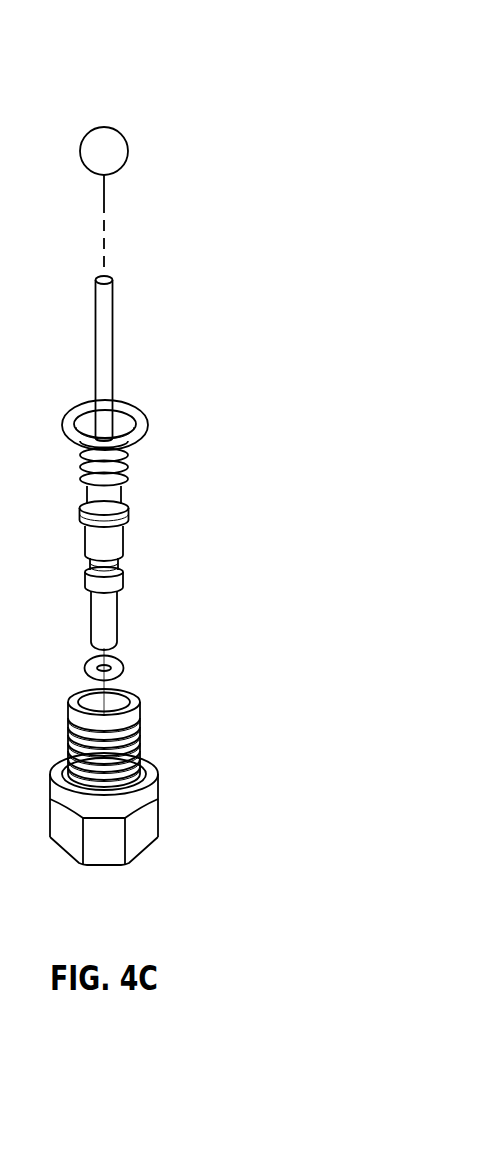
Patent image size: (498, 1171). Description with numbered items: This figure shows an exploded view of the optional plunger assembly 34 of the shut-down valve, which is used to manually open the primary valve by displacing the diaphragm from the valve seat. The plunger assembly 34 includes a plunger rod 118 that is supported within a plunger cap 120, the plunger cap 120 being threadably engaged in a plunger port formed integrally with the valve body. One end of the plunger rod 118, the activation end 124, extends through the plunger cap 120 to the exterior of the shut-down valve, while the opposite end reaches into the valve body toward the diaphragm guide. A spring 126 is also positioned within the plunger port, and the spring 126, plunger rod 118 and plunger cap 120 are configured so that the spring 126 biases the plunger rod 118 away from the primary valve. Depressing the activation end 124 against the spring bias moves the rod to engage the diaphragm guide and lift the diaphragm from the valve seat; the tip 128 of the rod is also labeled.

The plunger assembly 34 is at (355, 67).
The needle tip 128 is at (110, 275).
The plunger rod 118 is at (108, 355).
The spring 126 is at (122, 487).
The activation end 124 is at (112, 650).
The plunger cap 120 is at (145, 823).